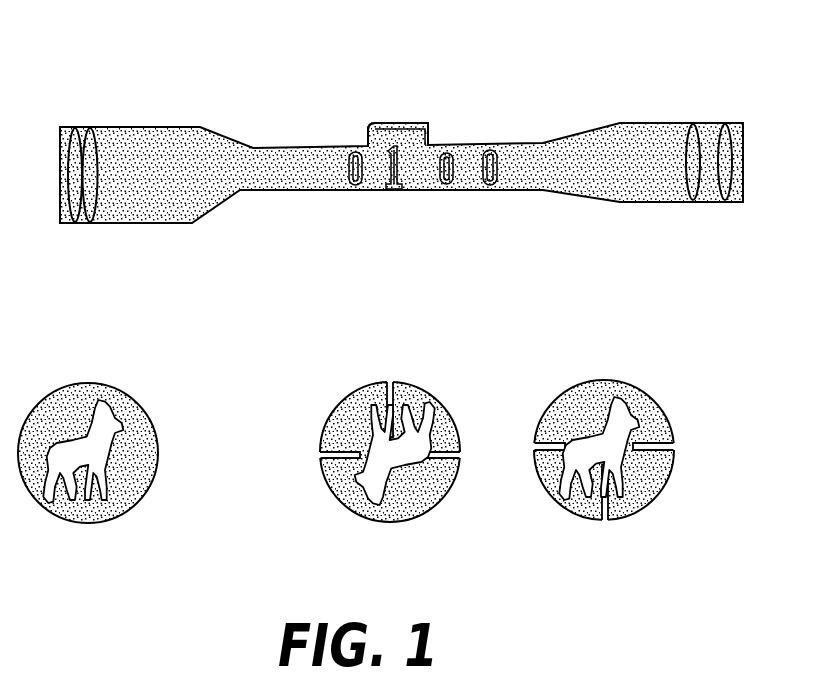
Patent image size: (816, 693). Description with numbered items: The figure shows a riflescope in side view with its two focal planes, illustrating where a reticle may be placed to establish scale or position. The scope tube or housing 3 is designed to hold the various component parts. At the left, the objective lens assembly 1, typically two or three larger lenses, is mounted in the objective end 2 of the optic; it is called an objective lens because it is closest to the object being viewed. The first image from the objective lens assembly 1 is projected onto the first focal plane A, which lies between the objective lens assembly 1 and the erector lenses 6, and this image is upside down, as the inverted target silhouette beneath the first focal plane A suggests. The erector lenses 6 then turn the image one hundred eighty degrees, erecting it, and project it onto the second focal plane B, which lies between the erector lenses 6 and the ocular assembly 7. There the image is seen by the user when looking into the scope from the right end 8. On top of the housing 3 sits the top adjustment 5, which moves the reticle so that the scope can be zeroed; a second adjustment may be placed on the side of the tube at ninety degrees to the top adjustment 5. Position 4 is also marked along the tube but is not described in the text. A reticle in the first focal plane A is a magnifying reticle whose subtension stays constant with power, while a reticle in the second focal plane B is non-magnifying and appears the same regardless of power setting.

The objective lens assembly 1 is at (83, 117).
The top adjustment 5 is at (362, 79).
The ocular assembly 7 is at (707, 107).
The objective end 2 is at (88, 402).
The scope tube or housing 3 is at (190, 306).
The step label 4 is at (293, 306).
The first focal plane A is at (390, 401).
The erector lenses 6 is at (502, 306).
The second focal plane B is at (604, 403).
The right end 8 is at (713, 306).